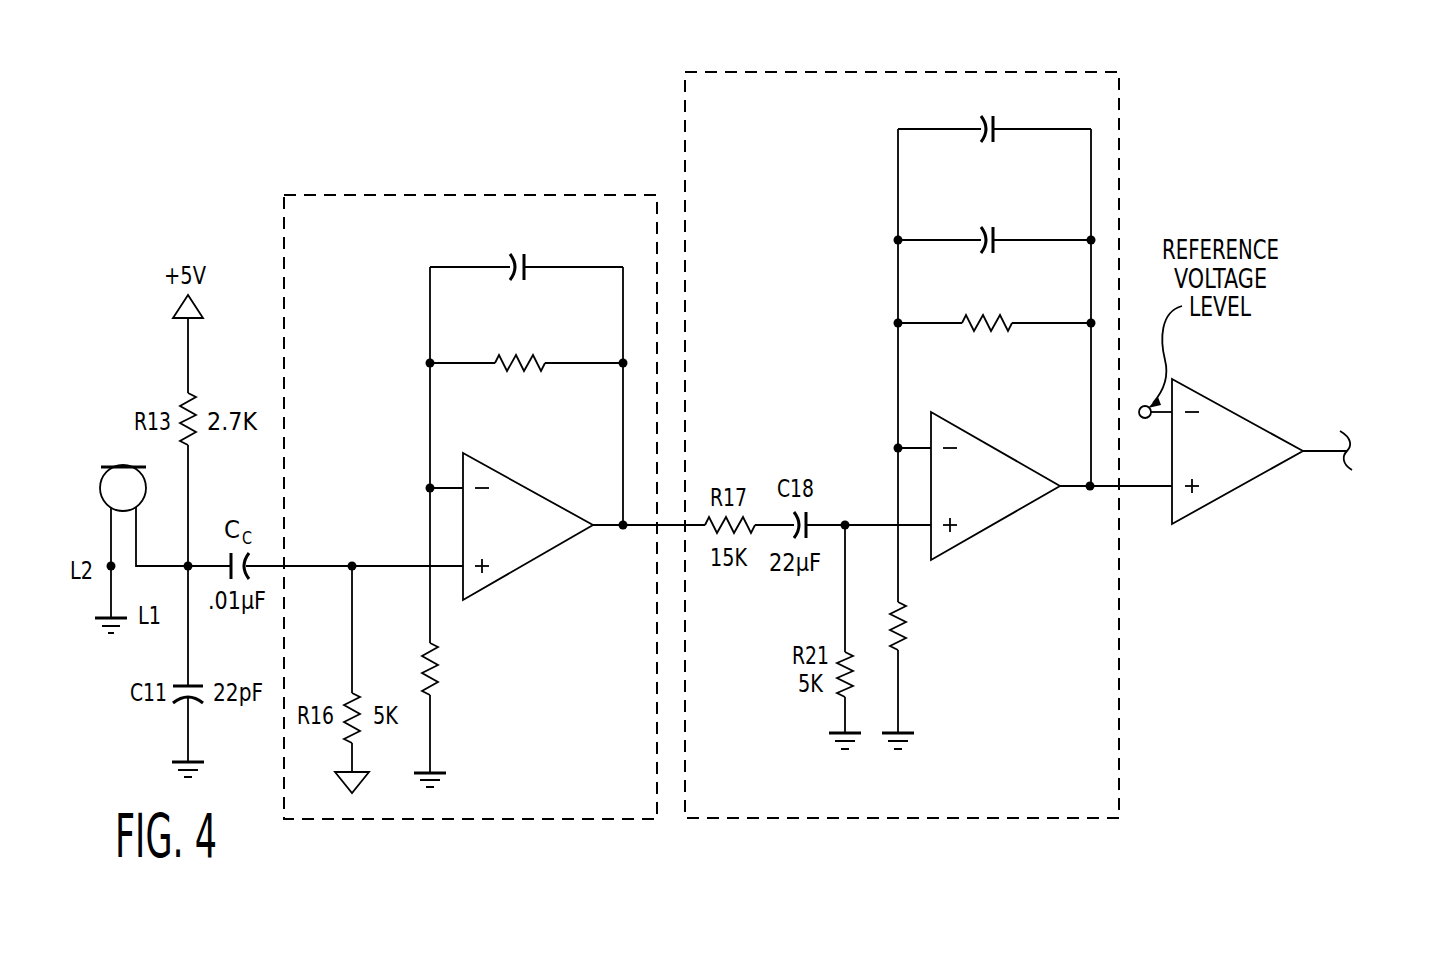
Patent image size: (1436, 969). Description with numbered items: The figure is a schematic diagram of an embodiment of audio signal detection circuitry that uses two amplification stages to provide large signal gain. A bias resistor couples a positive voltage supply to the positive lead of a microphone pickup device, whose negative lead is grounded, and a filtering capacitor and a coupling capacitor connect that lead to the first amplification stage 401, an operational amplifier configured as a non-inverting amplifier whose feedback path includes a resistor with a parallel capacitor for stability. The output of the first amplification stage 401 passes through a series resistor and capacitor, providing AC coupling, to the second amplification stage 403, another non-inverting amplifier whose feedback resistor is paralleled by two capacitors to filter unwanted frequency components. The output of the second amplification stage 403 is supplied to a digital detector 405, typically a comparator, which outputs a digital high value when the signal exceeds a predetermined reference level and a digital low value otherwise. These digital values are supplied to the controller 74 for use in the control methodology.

The first amplification stage 401 is at (284, 238).
The second amplification stage 403 is at (1120, 112).
The digital detector 405 is at (1196, 511).
The controller 74 is at (1350, 500).